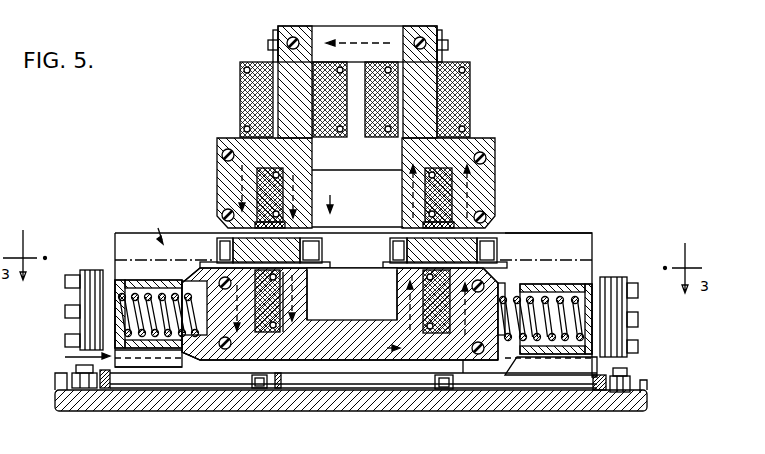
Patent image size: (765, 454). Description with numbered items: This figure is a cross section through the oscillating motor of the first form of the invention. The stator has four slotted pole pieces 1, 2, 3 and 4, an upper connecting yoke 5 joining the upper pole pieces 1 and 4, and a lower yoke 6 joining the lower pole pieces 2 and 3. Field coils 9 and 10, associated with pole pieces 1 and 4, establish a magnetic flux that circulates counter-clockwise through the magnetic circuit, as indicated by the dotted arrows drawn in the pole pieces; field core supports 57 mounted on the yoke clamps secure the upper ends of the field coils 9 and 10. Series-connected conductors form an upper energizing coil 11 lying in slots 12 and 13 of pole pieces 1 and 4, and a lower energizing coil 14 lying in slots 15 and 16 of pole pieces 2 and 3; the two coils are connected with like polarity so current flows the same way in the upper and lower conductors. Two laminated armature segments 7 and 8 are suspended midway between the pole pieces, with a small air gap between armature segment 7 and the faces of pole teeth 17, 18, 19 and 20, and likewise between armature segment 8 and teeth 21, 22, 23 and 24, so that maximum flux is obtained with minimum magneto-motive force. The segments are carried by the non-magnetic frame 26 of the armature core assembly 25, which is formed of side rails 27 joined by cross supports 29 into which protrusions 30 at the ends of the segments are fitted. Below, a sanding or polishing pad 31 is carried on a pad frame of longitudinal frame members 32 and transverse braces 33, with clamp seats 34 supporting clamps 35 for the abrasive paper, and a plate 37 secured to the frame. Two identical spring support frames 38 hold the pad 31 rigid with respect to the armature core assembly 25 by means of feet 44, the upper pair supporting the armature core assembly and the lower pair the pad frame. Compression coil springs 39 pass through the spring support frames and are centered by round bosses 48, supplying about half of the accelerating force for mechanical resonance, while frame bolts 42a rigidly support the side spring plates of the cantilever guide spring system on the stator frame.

The slotted pole piece 1 is at (222, 178).
The slotted pole piece 2 is at (232, 362).
The slotted pole piece 3 is at (463, 364).
The slotted pole piece 4 is at (491, 178).
The upper connecting yoke 5 is at (378, 33).
The lower yoke 6 is at (332, 364).
The armature segment 7 is at (290, 250).
The armature segment 8 is at (411, 275).
The field coil 9 is at (240, 80).
The field coil 10 is at (471, 90).
The upper energizing coil 11 is at (368, 178).
The slot 12 is at (275, 163).
The slot 13 is at (445, 163).
The lower energizing coil 14 is at (366, 306).
The slot 15 is at (262, 329).
The slot 16 is at (435, 332).
The pole tooth 17 is at (221, 195).
The pole tooth 18 is at (305, 214).
The pole tooth 19 is at (200, 273).
The pole tooth 20 is at (303, 292).
The pole tooth 21 is at (408, 302).
The pole tooth 22 is at (491, 291).
The pole tooth 23 is at (404, 203).
The pole tooth 24 is at (497, 197).
The armature core assembly 25 is at (127, 233).
The non-magnetic frame 26 is at (152, 228).
The side rail 27 is at (547, 245).
The cross support 29 is at (217, 232).
The protrusion 30 is at (230, 252).
The sanding or polishing pad 31 is at (135, 402).
The longitudinal frame member 32 is at (322, 391).
The transverse brace 33 is at (282, 382).
The clamp seat 34 is at (111, 381).
The clamp 35 is at (72, 372).
The plate 37 is at (390, 395).
The spring support frame 38 is at (73, 359).
The compression coil spring 39 is at (567, 317).
The frame bolt 42a is at (190, 362).
The foot or bracket 44 is at (120, 267).
The round boss 48 is at (123, 310).
The field core support 57 is at (266, 56).